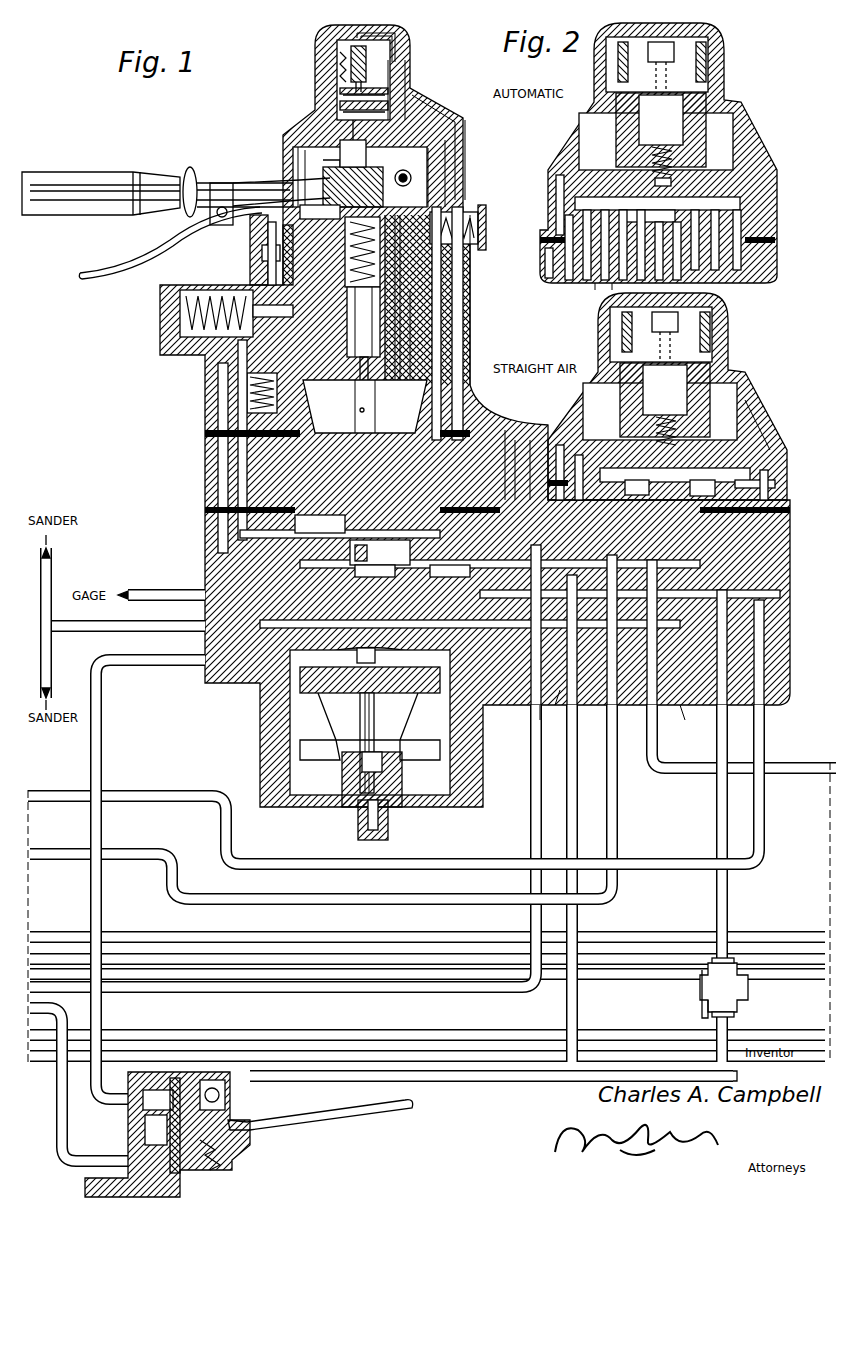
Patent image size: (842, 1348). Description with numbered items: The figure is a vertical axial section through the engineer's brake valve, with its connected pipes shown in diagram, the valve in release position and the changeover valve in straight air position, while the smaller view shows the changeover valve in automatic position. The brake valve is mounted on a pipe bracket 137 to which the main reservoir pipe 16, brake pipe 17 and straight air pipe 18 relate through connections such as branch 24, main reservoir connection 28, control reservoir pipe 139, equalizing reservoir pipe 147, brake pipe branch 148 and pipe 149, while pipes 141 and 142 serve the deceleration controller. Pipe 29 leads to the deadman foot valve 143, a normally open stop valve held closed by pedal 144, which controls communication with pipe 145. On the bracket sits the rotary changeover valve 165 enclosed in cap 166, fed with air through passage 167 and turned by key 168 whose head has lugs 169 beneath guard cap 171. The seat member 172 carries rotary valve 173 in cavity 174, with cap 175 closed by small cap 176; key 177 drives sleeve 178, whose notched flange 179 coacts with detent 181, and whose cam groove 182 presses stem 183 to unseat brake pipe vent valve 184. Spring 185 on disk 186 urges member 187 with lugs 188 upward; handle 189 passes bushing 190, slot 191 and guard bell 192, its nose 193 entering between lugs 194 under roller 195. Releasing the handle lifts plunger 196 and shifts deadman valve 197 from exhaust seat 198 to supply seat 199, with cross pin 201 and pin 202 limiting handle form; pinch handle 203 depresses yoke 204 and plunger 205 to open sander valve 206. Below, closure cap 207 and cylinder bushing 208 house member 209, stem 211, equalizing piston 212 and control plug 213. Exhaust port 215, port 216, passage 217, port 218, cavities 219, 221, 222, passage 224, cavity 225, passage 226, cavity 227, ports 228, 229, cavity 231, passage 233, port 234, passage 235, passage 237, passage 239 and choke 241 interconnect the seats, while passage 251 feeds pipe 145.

In FIG. 1, the main reservoir pipe 16 is at (205, 1031).
In FIG. 1, the brake pipe 17 is at (345, 1052).
In FIG. 1, the straight air pipe 18 is at (430, 1080).
In FIG. 1, the second branch 24 is at (571, 800).
In FIG. 1, the main reservoir connection pipe 28 is at (764, 745).
In FIG. 2, the main reservoir connection pipe 28 is at (735, 270).
In FIG. 1, the pipe to deadman foot valve 29 is at (60, 1020).
In FIG. 1, the pipe bracket 137 is at (505, 712).
In FIG. 1, the control reservoir pipe 139 is at (616, 775).
In FIG. 2, the control reservoir pipe 139 is at (598, 270).
In FIG. 1, the pipe to admission port 141 is at (130, 933).
In FIG. 1, the branch pipe 142 is at (233, 955).
In FIG. 1, the deadman foot valve 143 is at (130, 1133).
In FIG. 1, the pedal 144 is at (296, 1124).
In FIG. 1, the pipe from foot valve 145 is at (92, 735).
In FIG. 1, the equalizing reservoir pipe 147 is at (145, 984).
In FIG. 2, the equalizing reservoir pipe 147 is at (558, 256).
In FIG. 1, the brake pipe branch 148 is at (727, 722).
In FIG. 2, the brake pipe branch 148 is at (760, 258).
In FIG. 1, the pipe to deceleration rate controller 149 is at (656, 740).
In FIG. 2, the pipe to deceleration rate controller 149 is at (612, 283).
In FIG. 1, the rotary changeover valve 165 is at (728, 466).
In FIG. 2, the rotary changeover valve 165 is at (722, 196).
In FIG. 1, the cap 166 is at (730, 405).
In FIG. 2, the cap 166 is at (728, 142).
In FIG. 1, the passage 167 is at (554, 713).
In FIG. 1, the key 168 is at (622, 428).
In FIG. 2, the key 168 is at (608, 138).
In FIG. 1, the spaced lugs 169 is at (666, 337).
In FIG. 2, the spaced lugs 169 is at (662, 67).
In FIG. 1, the guard cap 171 is at (728, 323).
In FIG. 2, the guard cap 171 is at (724, 60).
In FIG. 1, the seat member 172 is at (205, 468).
In FIG. 1, the rotary valve 173 is at (250, 546).
In FIG. 1, the cavity 174 is at (355, 572).
In FIG. 1, the cap 175 is at (470, 326).
In FIG. 1, the small cap 176 is at (395, 47).
In FIG. 1, the key 177 is at (378, 410).
In FIG. 1, the sleeve 178 is at (445, 348).
In FIG. 1, the notched flange 179 is at (283, 242).
In FIG. 1, the detent 181 is at (486, 236).
In FIG. 1, the cam groove 182 is at (400, 312).
In FIG. 1, the stem 183 is at (268, 262).
In FIG. 1, the brake pipe vent valve 184 is at (205, 352).
In FIG. 1, the coiled compression spring 185 is at (362, 263).
In FIG. 1, the disk 186 is at (363, 359).
In FIG. 1, the member 187 is at (458, 272).
In FIG. 1, the spaced lugs 188 is at (452, 146).
In FIG. 1, the handle 189 is at (198, 182).
In FIG. 1, the bushing 190 is at (335, 176).
In FIG. 1, the slot 191 is at (298, 165).
In FIG. 1, the guard bell 192 is at (312, 147).
In FIG. 1, the nose 193 is at (466, 182).
In FIG. 1, the lugs 194 is at (466, 200).
In FIG. 1, the roller 195 is at (458, 164).
In FIG. 1, the plunger 196 is at (348, 140).
In FIG. 1, the deadman valve 197 is at (337, 80).
In FIG. 1, the exhaust seat 198 is at (440, 112).
In FIG. 1, the supply seat 199 is at (380, 76).
In FIG. 1, the cross pin 201 is at (300, 182).
In FIG. 1, the pin 202 is at (320, 212).
In FIG. 1, the pinch handle 203 is at (108, 272).
In FIG. 1, the yoke 204 is at (240, 235).
In FIG. 1, the plunger 205 is at (250, 270).
In FIG. 1, the sander valve 206 is at (240, 393).
In FIG. 1, the closure cap 207 is at (405, 805).
In FIG. 1, the cylinder bushing 208 is at (290, 720).
In FIG. 1, the member 209 is at (436, 738).
In FIG. 1, the stem 211 is at (360, 712).
In FIG. 1, the equalizing piston 212 is at (398, 692).
In FIG. 1, the control plug 213 is at (358, 834).
In FIG. 1, the exhaust port 215 is at (693, 721).
In FIG. 2, the exhaust port 215 is at (651, 217).
In FIG. 1, the port 216 is at (240, 522).
In FIG. 1, the passage 217 is at (250, 492).
In FIG. 1, the port 218 is at (775, 478).
In FIG. 2, the port 218 is at (765, 225).
In FIG. 1, the cavity 219 is at (682, 487).
In FIG. 1, the cavity 221 is at (770, 470).
In FIG. 2, the cavity 222 is at (760, 210).
In FIG. 1, the passage 224 is at (500, 450).
In FIG. 2, the passage 224 is at (548, 240).
In FIG. 1, the cavity 225 is at (632, 480).
In FIG. 2, the passage 226 is at (580, 200).
In FIG. 2, the cavity 227 is at (652, 182).
In FIG. 1, the port 228 is at (320, 524).
In FIG. 1, the port 229 is at (585, 455).
In FIG. 2, the port 229 is at (560, 228).
In FIG. 2, the cavity 231 is at (558, 175).
In FIG. 1, the passage 233 is at (512, 440).
In FIG. 2, the passage 233 is at (545, 256).
In FIG. 1, the port 234 is at (787, 512).
In FIG. 2, the port 234 is at (776, 242).
In FIG. 1, the passage 235 is at (745, 440).
In FIG. 1, the passage 237 is at (535, 445).
In FIG. 1, the passage 239 is at (460, 572).
In FIG. 1, the choke 241 is at (394, 552).
In FIG. 1, the passage 251 is at (400, 92).